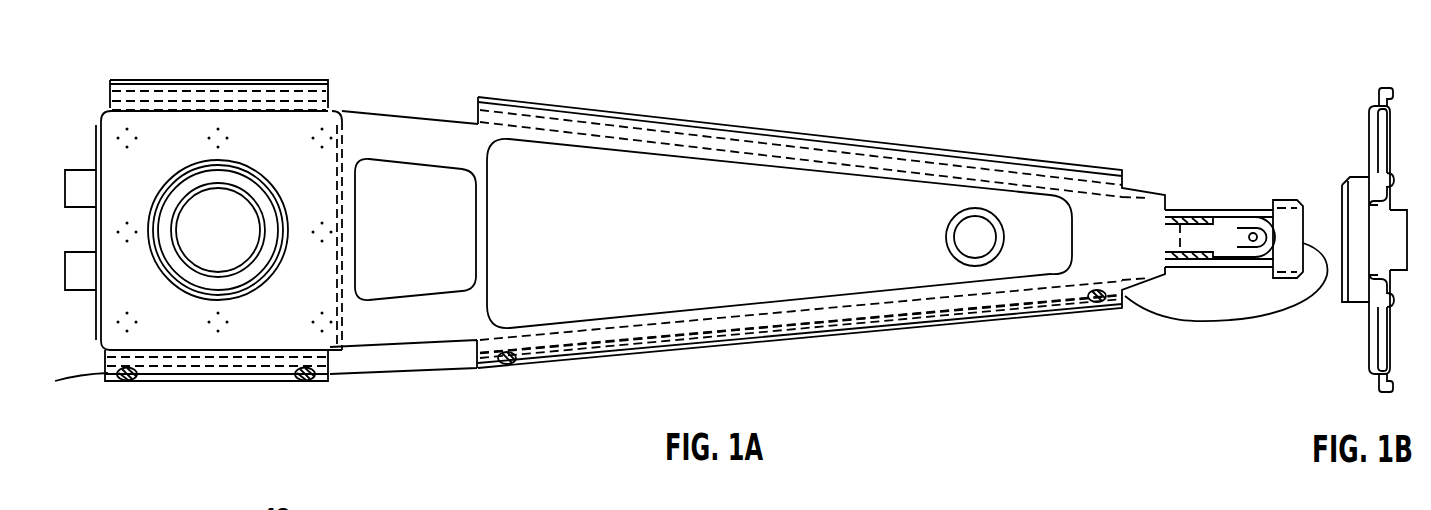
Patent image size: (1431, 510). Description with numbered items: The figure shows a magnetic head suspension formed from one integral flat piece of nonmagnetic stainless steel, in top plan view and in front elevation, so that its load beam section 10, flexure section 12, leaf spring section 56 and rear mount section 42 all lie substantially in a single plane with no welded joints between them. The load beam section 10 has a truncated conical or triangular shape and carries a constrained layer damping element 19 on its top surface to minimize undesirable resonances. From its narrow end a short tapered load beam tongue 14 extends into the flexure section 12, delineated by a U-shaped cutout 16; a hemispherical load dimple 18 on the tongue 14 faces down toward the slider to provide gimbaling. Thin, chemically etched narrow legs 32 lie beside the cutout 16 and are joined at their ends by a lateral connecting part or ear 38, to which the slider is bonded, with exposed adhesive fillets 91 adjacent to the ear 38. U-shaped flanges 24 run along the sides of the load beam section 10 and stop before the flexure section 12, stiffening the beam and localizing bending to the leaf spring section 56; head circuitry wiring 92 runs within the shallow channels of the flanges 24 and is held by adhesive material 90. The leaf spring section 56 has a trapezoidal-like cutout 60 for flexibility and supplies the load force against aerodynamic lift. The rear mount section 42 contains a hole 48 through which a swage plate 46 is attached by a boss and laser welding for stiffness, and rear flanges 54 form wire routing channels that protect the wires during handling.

In FIG. 1A, the load beam section 10 is at (705, 183).
In FIG. 1A, the flexure section 12 is at (1225, 186).
In FIG. 1A, the load beam tongue 14 is at (1227, 245).
In FIG. 1A, the U-shaped cutout 16 is at (1268, 252).
In FIG. 1A, the load dimple 18 is at (1255, 233).
In FIG. 1A, the constrained layer damping element 19 is at (728, 308).
In FIG. 1A, the U-shaped flanges 24 is at (832, 148).
In FIG. 1B, the U-shaped flanges 24 is at (1385, 183).
In FIG. 1A, the narrow legs 32 is at (1237, 210).
In FIG. 1A, the lateral connecting part or ear 38 is at (1293, 230).
In FIG. 1B, the lateral connecting part or ear 38 is at (1368, 203).
In FIG. 1A, the rear mount section 42 is at (232, 70).
In FIG. 1A, the swage plate 46 is at (290, 326).
In FIG. 1A, the hole 48 is at (240, 177).
In FIG. 1A, the rear flanges 54 is at (331, 88).
In FIG. 1B, the rear flanges 54 is at (1390, 92).
In FIG. 1A, the leaf spring section 56 is at (412, 115).
In FIG. 1A, the trapezoidal-like cutout 60 is at (455, 242).
In FIG. 1A, the adhesive material 90 is at (130, 375).
In FIG. 1B, the adhesive fillets 91 is at (1378, 207).
In FIG. 1A, the head circuitry wiring 92 is at (397, 367).